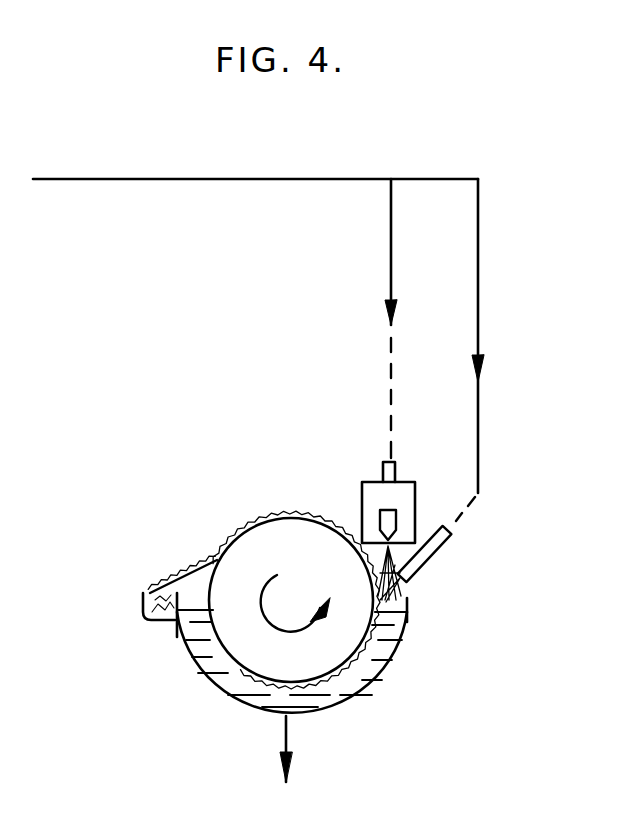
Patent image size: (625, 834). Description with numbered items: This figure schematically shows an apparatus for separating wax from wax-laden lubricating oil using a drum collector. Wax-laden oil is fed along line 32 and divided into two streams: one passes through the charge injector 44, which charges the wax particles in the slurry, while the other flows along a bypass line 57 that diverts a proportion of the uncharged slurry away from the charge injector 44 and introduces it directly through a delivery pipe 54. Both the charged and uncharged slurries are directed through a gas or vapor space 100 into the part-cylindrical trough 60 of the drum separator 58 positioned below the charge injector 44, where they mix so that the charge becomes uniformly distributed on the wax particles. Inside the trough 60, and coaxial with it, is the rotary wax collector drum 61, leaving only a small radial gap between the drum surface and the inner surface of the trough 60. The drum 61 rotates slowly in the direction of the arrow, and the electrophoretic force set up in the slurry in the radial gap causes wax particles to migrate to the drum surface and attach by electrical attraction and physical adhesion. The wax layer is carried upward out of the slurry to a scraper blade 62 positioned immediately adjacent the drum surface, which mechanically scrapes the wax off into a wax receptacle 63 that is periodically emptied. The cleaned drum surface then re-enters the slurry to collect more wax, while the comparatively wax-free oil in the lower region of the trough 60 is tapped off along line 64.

The line 32 is at (103, 180).
The bypass line 57 is at (478, 270).
The charge injector 44 is at (362, 482).
The delivery pipe 54 is at (437, 553).
The gas or vapor space 100 is at (402, 582).
The drum separator 58 is at (246, 525).
The scraper blade 62 is at (203, 562).
The wax receptacle 63 is at (143, 608).
The part-cylindrical trough 60 is at (376, 687).
The rotary wax collector drum 61 is at (233, 650).
The line 64 is at (288, 740).